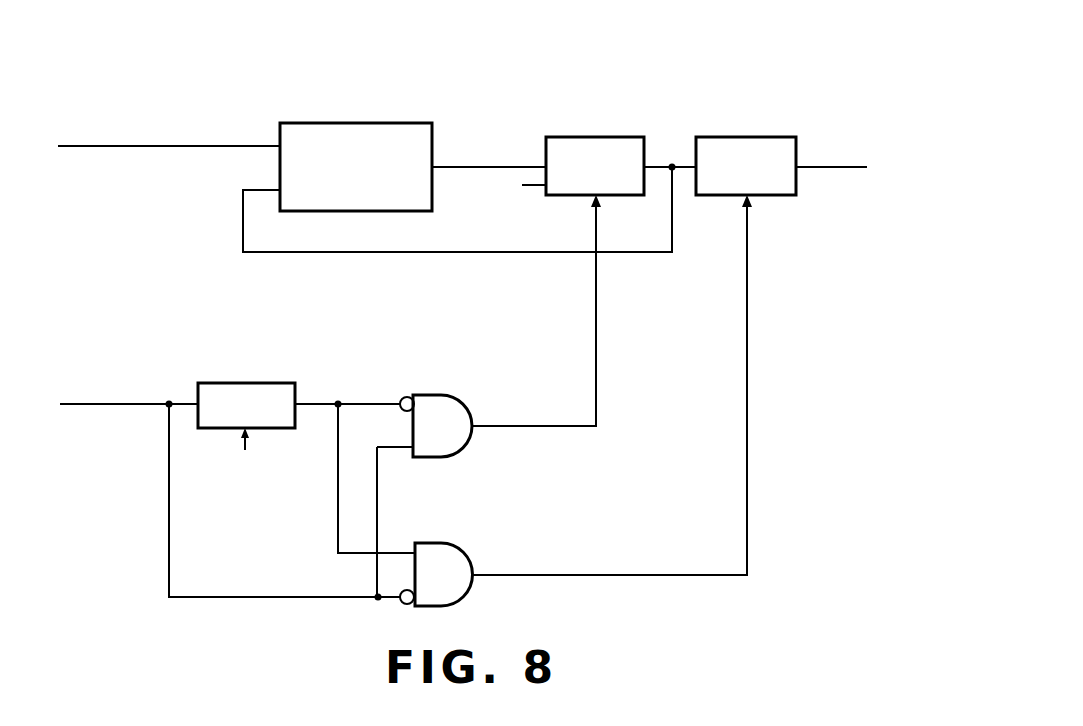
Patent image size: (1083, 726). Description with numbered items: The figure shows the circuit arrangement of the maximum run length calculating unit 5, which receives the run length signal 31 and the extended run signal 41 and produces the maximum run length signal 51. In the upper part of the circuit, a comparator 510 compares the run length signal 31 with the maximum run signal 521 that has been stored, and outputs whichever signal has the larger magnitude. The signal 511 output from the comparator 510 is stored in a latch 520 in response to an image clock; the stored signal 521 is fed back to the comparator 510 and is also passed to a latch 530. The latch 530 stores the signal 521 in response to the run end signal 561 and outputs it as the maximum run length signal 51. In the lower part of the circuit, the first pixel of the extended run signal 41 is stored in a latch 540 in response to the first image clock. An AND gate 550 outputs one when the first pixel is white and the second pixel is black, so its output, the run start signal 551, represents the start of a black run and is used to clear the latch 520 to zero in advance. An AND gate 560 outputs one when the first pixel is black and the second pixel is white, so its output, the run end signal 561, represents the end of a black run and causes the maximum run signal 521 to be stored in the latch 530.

The maximum run length calculating unit 5 is at (762, 69).
The run length signal 31 is at (127, 146).
The extended run signal 41 is at (130, 404).
The maximum run length signal 51 is at (826, 169).
The comparator 510 is at (415, 123).
The signal output from the comparator 511 is at (473, 167).
The latch 520 is at (601, 137).
The maximum run signal 521 is at (660, 167).
The latch 530 is at (748, 137).
The latch 540 is at (263, 383).
The AND gate 550 is at (445, 395).
The run start signal 551 is at (598, 288).
The AND gate 560 is at (445, 543).
The run end signal 561 is at (598, 575).